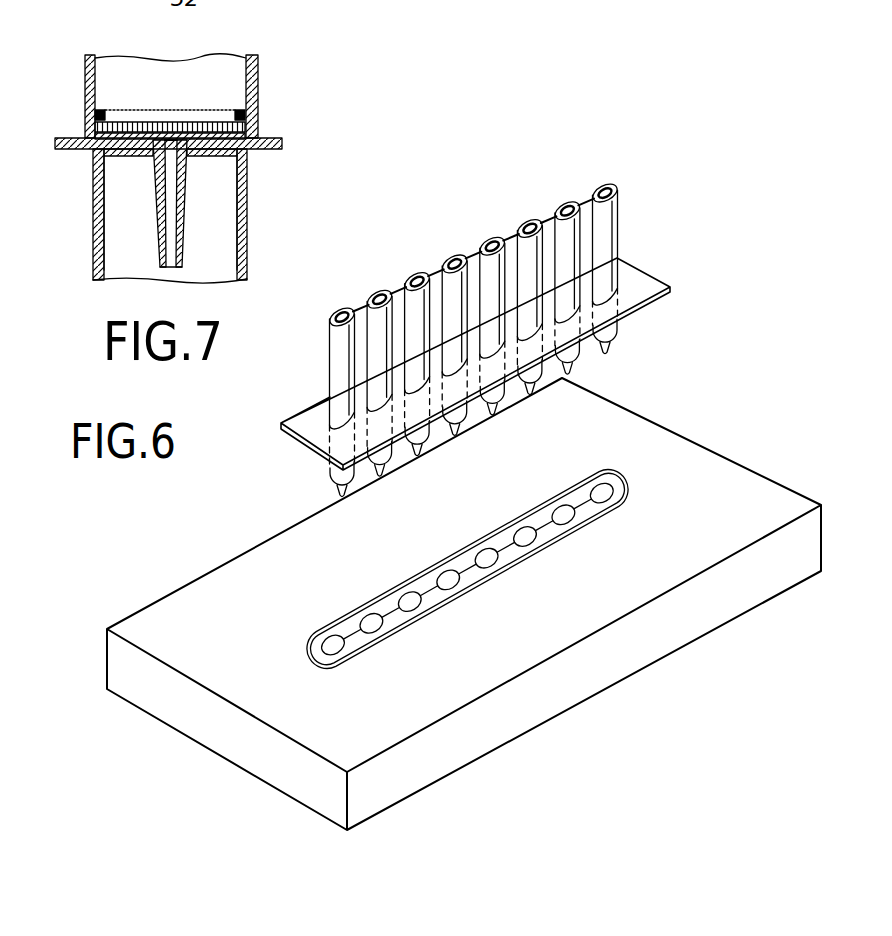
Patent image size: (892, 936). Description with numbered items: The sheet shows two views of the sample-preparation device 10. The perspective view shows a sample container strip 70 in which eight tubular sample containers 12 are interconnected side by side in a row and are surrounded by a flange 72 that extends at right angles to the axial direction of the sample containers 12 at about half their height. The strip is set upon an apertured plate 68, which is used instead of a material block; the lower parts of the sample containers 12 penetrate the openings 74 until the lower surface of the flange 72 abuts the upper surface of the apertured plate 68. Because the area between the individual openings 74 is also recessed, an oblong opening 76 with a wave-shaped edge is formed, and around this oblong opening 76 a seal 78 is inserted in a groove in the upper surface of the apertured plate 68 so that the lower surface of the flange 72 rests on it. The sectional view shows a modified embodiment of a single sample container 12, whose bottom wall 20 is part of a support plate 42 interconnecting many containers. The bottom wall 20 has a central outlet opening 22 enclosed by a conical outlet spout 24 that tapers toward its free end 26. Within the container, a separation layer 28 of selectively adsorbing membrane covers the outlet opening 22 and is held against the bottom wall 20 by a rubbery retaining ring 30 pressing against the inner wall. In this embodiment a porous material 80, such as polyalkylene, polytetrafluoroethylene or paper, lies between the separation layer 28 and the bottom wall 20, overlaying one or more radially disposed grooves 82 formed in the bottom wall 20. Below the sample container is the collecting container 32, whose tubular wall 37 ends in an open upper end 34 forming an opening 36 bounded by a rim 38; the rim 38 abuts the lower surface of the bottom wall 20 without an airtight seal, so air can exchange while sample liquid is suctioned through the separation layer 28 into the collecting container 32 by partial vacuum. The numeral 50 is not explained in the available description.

In FIG. 7, the device 10 is at (266, 76).
In FIG. 6, the sample container 12 is at (596, 186).
In FIG. 7, the sample container 12 is at (83, 64).
In FIG. 7, the bottom wall 20 is at (132, 152).
In FIG. 7, the outlet opening 22 is at (178, 157).
In FIG. 7, the outlet spout 24 is at (155, 213).
In FIG. 7, the free end 26 is at (186, 261).
In FIG. 7, the separation layer 28 is at (155, 127).
In FIG. 7, the retaining ring 30 is at (102, 116).
In FIG. 7, the collecting container 32 is at (92, 259).
In FIG. 7, the upper end 34 is at (253, 189).
In FIG. 7, the opening 36 is at (102, 162).
In FIG. 7, the tubular wall 37 is at (243, 248).
In FIG. 7, the rim 38 is at (250, 158).
In FIG. 7, the support plate 42 is at (270, 141).
In FIG. 7, the upper portion 50 is at (333, 10).
In FIG. 6, the apertured plate 68 is at (272, 705).
In FIG. 6, the sample container strip 70 is at (637, 192).
In FIG. 6, the flange 72 is at (647, 285).
In FIG. 6, the openings 74 is at (322, 638).
In FIG. 6, the oblong opening 76 is at (512, 564).
In FIG. 6, the seal 78 is at (610, 518).
In FIG. 7, the porous material 80 is at (90, 128).
In FIG. 7, the grooves 82 is at (173, 144).